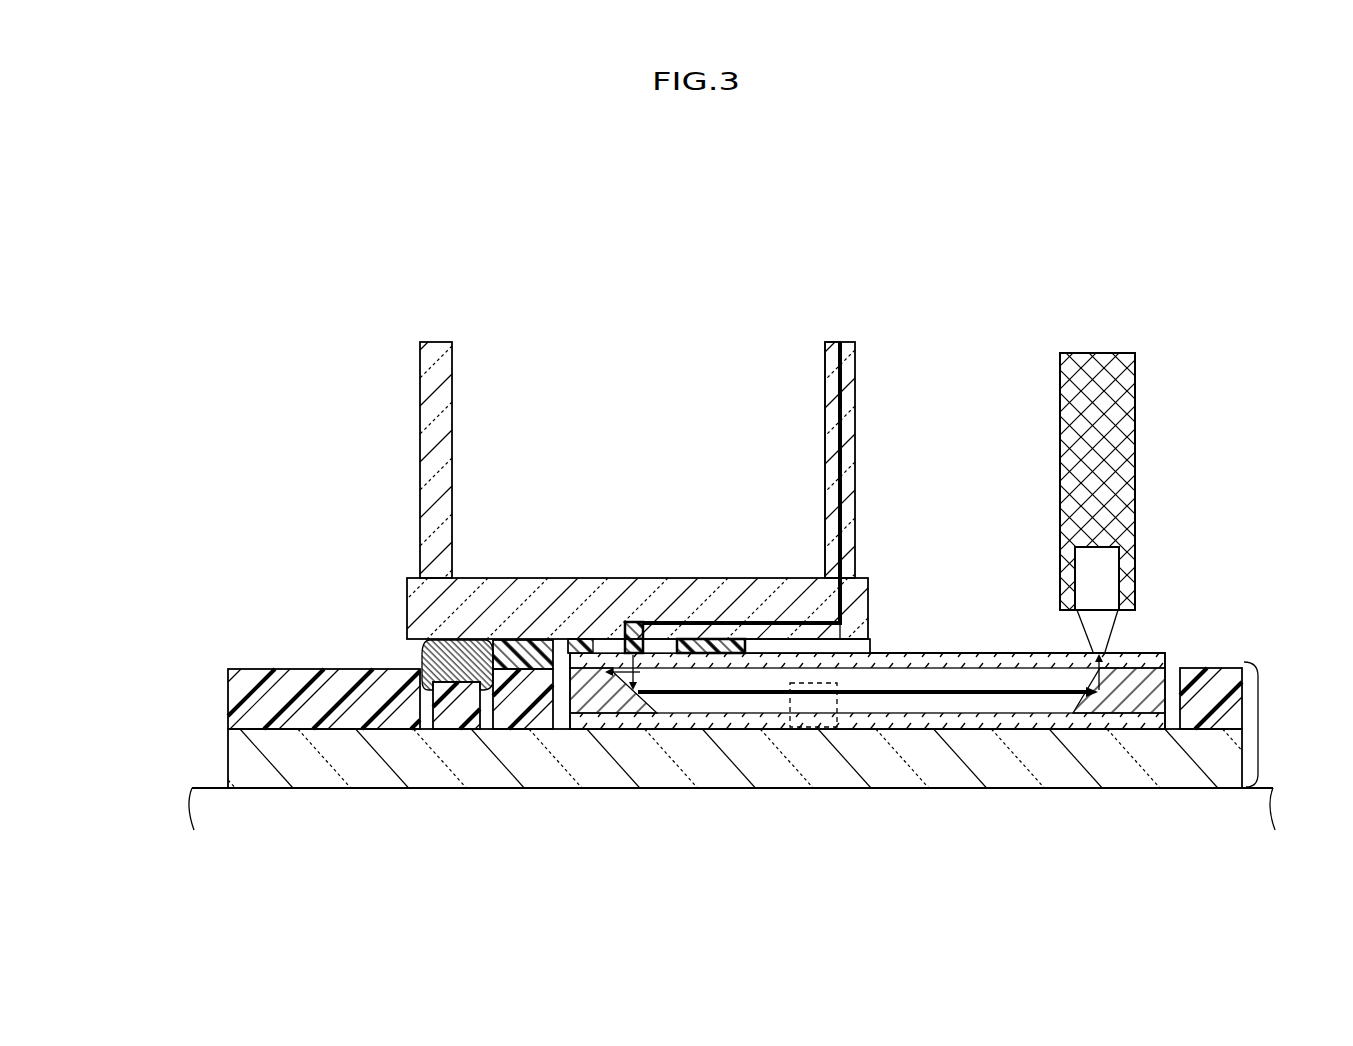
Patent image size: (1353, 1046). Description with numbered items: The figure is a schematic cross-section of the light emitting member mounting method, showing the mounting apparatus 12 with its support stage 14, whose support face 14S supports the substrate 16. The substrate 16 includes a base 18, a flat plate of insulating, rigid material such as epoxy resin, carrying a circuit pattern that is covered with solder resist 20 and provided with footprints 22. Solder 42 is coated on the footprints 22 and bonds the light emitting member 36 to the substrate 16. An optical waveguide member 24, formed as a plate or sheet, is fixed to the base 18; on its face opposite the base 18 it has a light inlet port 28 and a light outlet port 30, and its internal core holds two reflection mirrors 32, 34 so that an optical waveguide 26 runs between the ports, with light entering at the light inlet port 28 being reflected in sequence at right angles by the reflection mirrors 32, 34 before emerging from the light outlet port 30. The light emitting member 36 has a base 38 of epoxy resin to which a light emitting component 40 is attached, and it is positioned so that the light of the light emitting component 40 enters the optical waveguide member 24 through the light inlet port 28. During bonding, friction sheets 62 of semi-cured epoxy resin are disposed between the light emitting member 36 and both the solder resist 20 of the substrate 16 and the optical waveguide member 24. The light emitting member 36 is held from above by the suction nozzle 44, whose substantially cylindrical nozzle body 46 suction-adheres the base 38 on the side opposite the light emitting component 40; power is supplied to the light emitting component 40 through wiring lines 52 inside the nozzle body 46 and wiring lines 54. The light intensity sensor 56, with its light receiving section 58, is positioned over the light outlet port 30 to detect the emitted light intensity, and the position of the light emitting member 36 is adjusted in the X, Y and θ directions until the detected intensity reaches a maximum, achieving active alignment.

The mounting apparatus 12 is at (1090, 248).
The support stage 14 is at (1272, 786).
The support face 14S is at (212, 787).
The substrate 16 is at (1259, 722).
The base 18 is at (228, 745).
The solder resist 20 is at (228, 672).
The footprints 22 is at (437, 700).
The optical waveguide member 24 is at (1160, 655).
The optical waveguide 26 is at (962, 670).
The light inlet port 28 is at (618, 640).
The light outlet port 30 is at (1115, 651).
The reflection mirror 32 is at (650, 705).
The reflection mirror 34 is at (1080, 712).
The light emitting member 36 is at (407, 593).
The base 38 is at (577, 640).
The light emitting component 40 is at (633, 640).
The solder 42 is at (428, 655).
The suction nozzle 44 is at (417, 382).
The nozzle body 46 is at (855, 430).
The wiring lines 52 is at (855, 370).
The wiring lines 54 is at (850, 597).
The light intensity sensor 56 is at (1140, 403).
The light receiving section 58 is at (1075, 615).
The friction sheets 62 is at (517, 640).